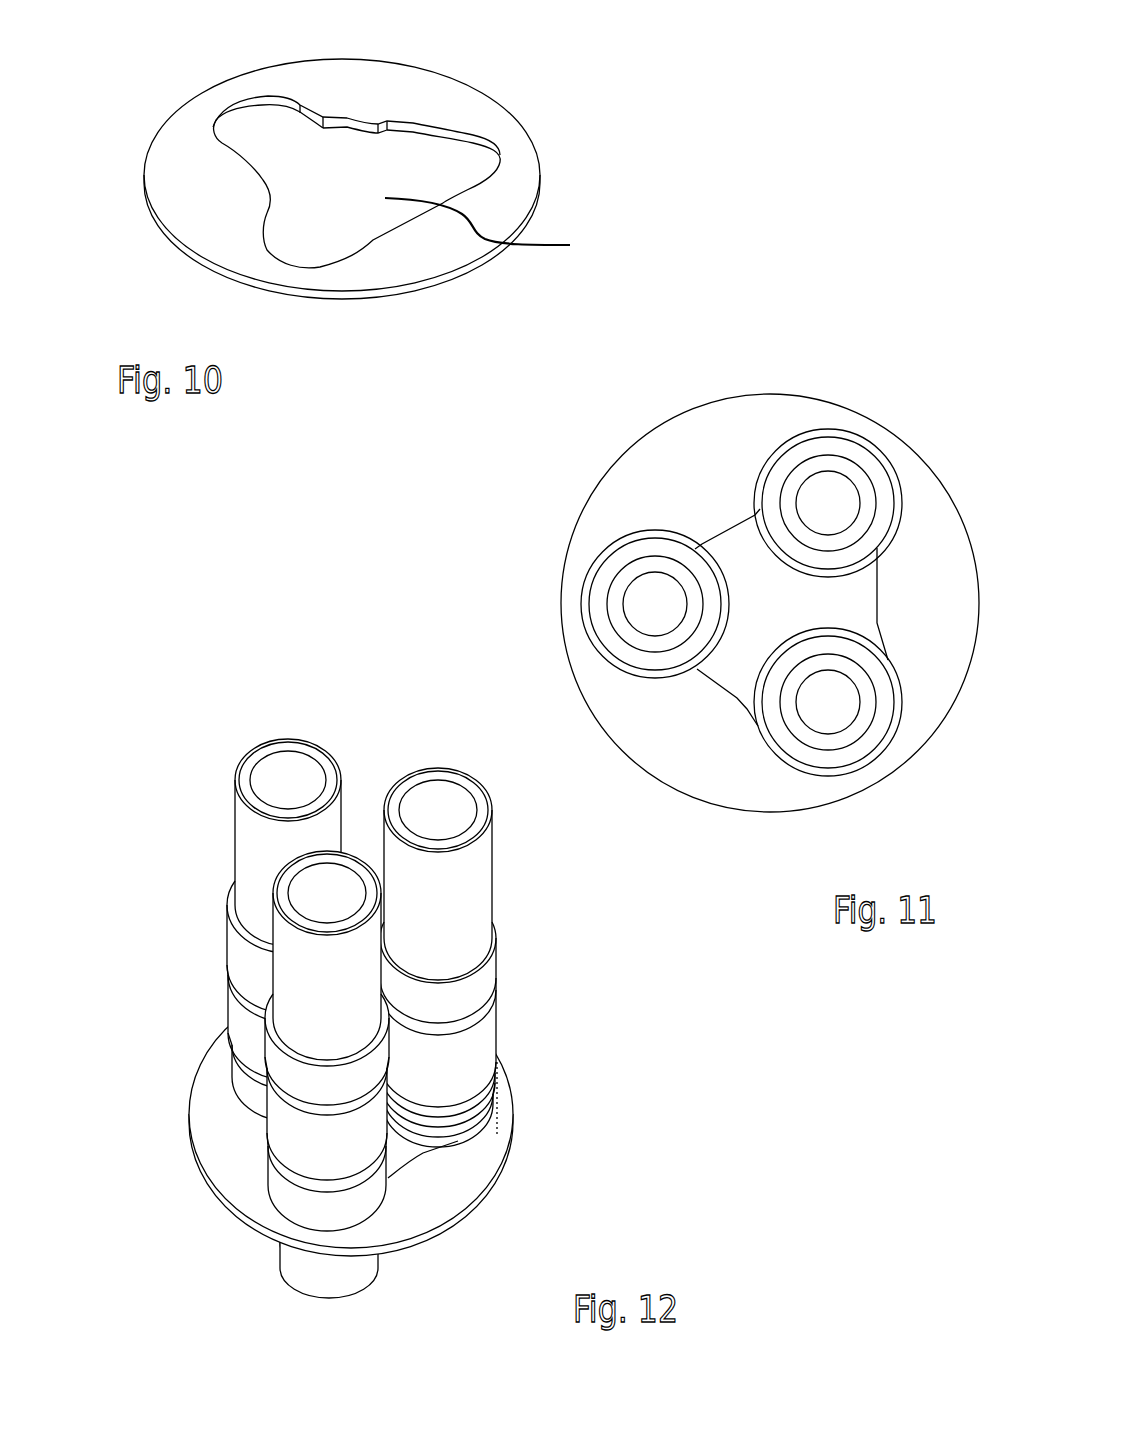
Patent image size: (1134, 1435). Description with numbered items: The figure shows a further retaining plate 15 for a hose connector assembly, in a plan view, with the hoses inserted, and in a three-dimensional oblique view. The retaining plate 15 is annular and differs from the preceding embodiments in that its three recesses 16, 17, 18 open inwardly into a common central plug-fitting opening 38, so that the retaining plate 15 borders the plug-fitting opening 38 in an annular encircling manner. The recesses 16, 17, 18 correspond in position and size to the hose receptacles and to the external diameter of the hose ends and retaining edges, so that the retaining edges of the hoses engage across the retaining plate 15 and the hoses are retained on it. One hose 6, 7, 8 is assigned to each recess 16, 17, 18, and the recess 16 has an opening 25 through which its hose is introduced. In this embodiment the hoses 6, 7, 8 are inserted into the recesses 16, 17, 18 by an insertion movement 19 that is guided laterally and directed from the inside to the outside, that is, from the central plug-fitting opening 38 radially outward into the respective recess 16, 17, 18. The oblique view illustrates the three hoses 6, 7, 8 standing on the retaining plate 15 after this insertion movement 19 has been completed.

In FIG. 11, the hose 6 is at (599, 590).
In FIG. 12, the hose 6 is at (302, 1147).
In FIG. 11, the hose 7 is at (878, 743).
In FIG. 12, the hose 7 is at (467, 945).
In FIG. 11, the hose 8 is at (877, 475).
In FIG. 12, the hose 8 is at (262, 829).
In FIG. 10, the retaining plate 15 is at (343, 109).
In FIG. 11, the retaining plate 15 is at (689, 478).
In FIG. 12, the retaining plate 15 is at (433, 1207).
In FIG. 10, the recess 16 is at (353, 178).
In FIG. 10, the recess 17 is at (377, 162).
In FIG. 10, the recess 18 is at (338, 163).
In FIG. 10, the insertion movement 19 is at (312, 152).
In FIG. 10, the opening 25 is at (272, 290).
In FIG. 10, the plug-fitting opening 38 is at (373, 198).
In FIG. 11, the plug-fitting opening 38 is at (767, 610).